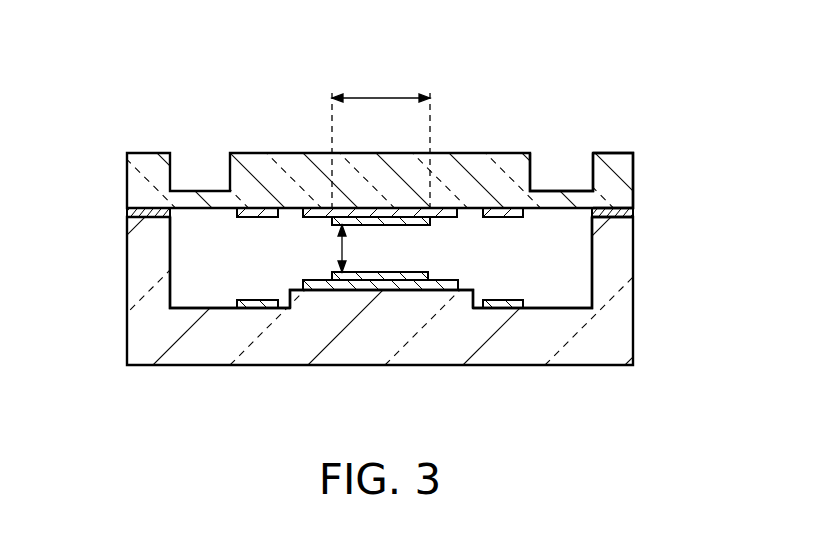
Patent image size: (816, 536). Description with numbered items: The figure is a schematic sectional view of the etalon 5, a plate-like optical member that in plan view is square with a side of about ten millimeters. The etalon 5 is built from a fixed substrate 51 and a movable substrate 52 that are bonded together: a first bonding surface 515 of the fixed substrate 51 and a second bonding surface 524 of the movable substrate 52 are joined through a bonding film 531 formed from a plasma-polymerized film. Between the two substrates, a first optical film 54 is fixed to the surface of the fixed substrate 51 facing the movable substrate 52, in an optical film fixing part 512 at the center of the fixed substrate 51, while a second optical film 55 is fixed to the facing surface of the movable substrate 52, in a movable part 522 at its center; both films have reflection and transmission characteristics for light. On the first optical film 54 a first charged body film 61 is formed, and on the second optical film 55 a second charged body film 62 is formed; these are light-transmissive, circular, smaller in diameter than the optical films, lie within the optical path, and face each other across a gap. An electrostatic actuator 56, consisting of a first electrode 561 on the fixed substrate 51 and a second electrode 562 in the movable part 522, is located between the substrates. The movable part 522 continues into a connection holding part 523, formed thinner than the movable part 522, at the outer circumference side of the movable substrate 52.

The etalon 5 is at (660, 84).
The fixed substrate 51 is at (630, 308).
The optical film fixing part 512 is at (285, 307).
The first bonding surface 515 is at (621, 224).
The movable substrate 52 is at (626, 186).
The movable part 522 is at (503, 172).
The connection holding part 523 is at (567, 190).
The second bonding surface 524 is at (622, 178).
The bonding film 531 is at (632, 212).
The first optical film 54 is at (443, 290).
The second optical film 55 is at (452, 210).
The electrostatic actuator 56 is at (292, 93).
The first electrode 561 is at (257, 297).
The second electrode 562 is at (272, 212).
The first charged body film 61 is at (413, 272).
The second charged body film 62 is at (413, 222).